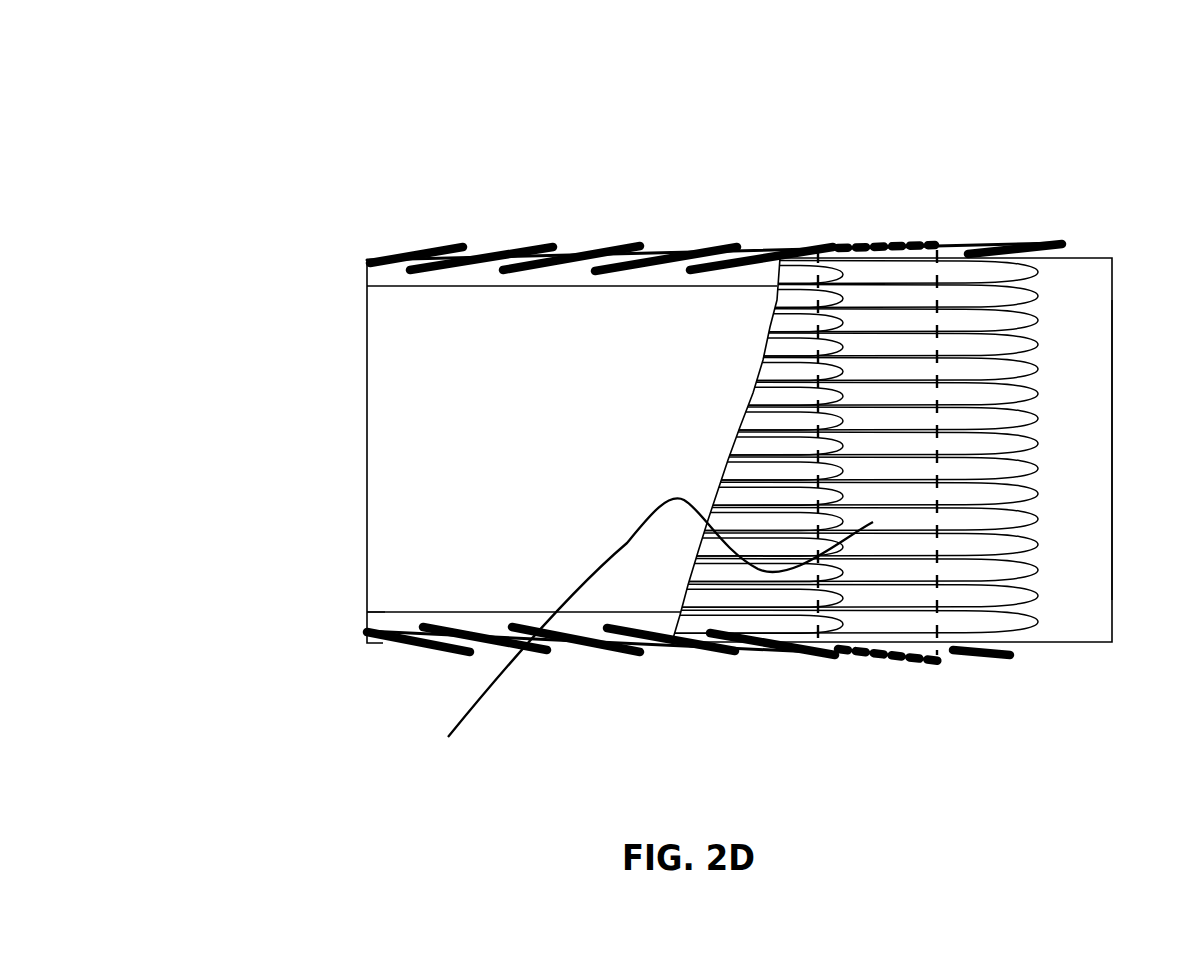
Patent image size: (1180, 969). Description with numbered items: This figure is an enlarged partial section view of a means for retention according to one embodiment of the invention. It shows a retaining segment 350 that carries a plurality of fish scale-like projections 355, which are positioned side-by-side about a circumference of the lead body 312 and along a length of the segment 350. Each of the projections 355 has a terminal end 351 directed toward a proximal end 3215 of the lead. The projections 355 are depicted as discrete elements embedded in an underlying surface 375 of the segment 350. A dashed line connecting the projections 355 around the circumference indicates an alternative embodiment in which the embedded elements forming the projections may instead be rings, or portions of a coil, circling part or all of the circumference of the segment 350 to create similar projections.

The retaining segment 350 is at (658, 131).
The proximal end 3215 is at (946, 203).
The terminal ends 351 is at (937, 623).
The fish scale-like projections 355 is at (890, 733).
The underlying surface 375 is at (370, 620).
The lead body 312 is at (1090, 610).